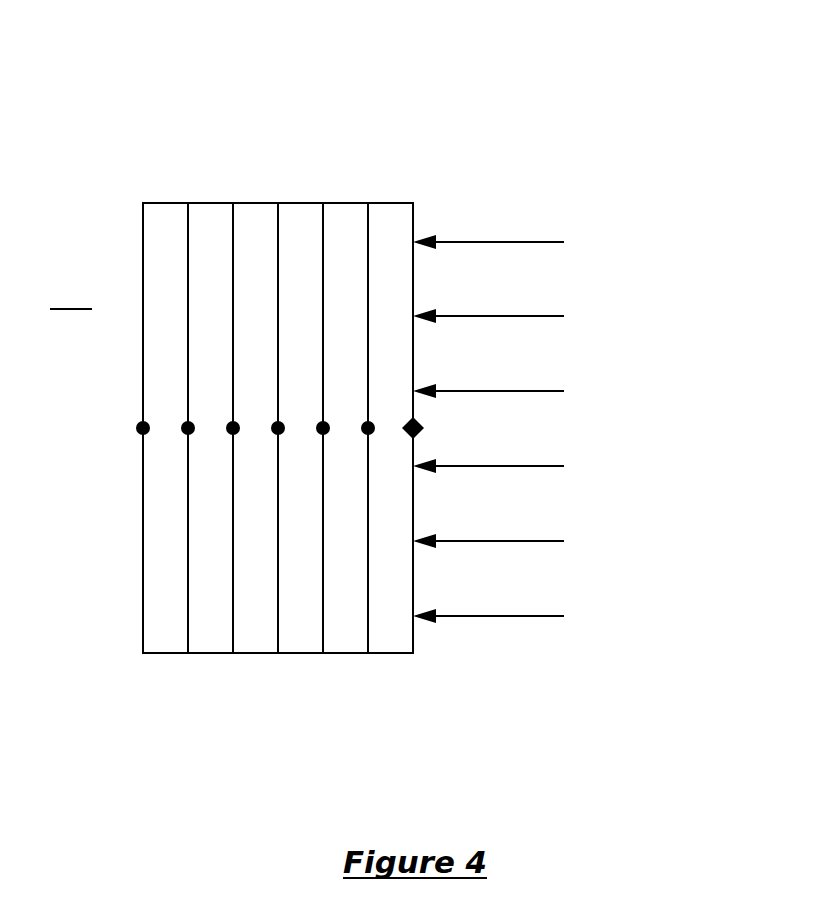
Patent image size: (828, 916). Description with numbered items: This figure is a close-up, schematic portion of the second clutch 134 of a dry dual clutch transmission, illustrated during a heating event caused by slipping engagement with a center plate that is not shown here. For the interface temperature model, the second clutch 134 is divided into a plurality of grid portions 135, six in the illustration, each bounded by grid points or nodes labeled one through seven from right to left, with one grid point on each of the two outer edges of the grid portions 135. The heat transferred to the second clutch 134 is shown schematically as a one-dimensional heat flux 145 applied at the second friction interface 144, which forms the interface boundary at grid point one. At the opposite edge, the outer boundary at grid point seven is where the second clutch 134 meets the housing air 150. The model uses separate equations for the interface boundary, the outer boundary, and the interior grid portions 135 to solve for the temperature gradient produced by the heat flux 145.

The second clutch 134 is at (304, 93).
The grid portions 135 is at (167, 212).
The second friction interface 144 is at (415, 227).
The heat flux 145 is at (535, 391).
The housing air 150 is at (71, 298).